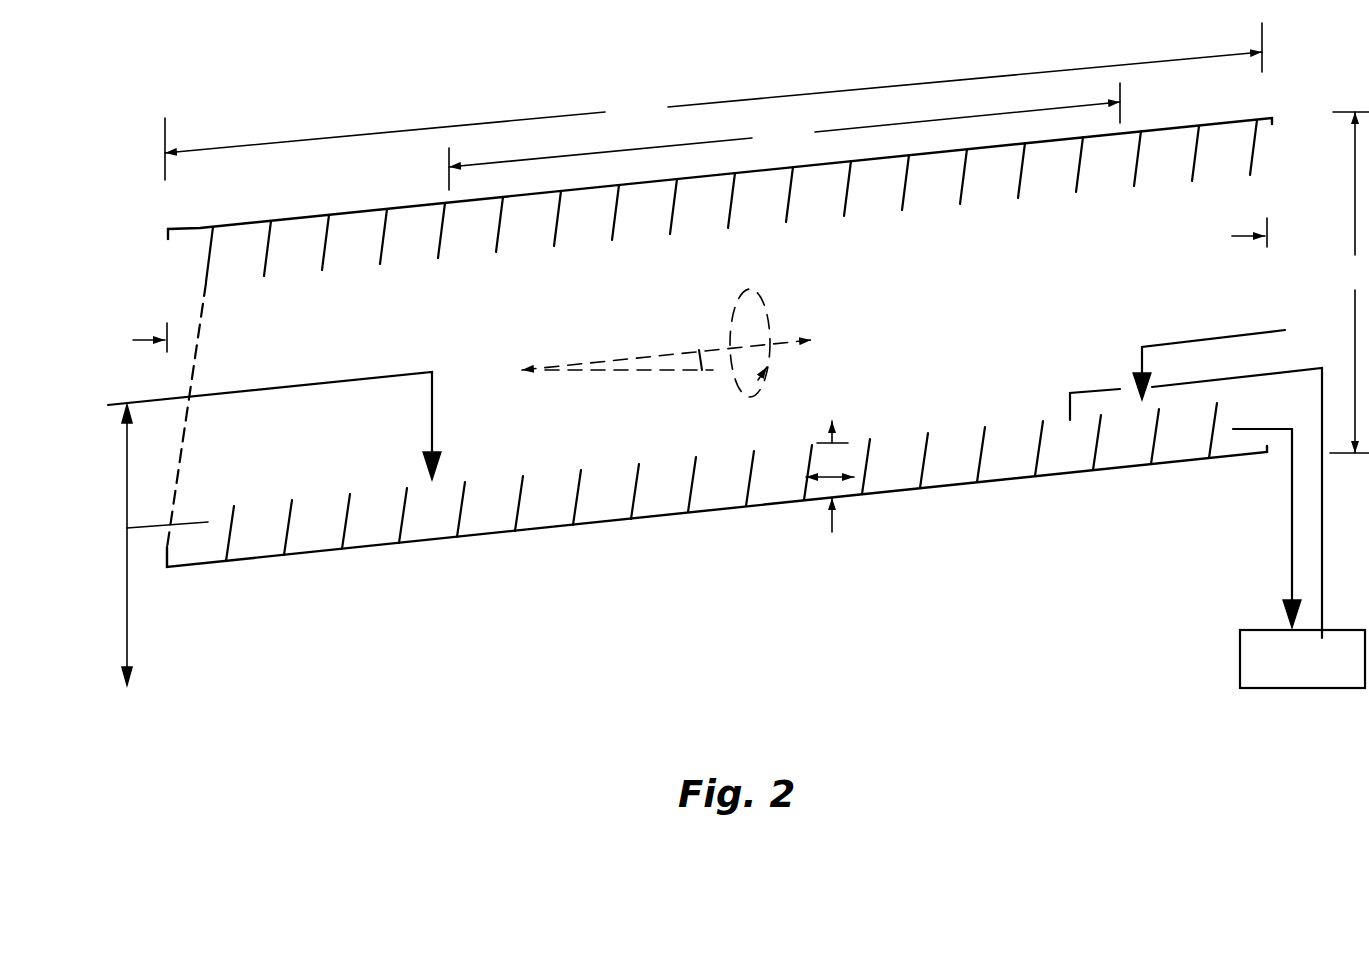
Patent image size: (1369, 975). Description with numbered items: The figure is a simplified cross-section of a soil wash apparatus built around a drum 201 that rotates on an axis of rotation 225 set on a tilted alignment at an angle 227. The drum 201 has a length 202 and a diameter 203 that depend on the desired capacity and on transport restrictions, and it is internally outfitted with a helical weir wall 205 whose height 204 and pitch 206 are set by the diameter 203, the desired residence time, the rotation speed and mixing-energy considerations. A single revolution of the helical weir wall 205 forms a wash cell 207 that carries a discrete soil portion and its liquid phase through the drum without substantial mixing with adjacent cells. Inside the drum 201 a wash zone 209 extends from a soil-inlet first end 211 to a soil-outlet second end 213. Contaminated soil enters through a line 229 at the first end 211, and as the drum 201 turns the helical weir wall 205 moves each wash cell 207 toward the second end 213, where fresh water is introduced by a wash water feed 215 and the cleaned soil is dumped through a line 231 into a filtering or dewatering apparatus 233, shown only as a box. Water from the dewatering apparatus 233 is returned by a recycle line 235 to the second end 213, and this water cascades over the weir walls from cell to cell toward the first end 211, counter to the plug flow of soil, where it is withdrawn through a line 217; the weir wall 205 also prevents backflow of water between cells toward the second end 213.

The drum 201 is at (198, 225).
The length 202 is at (713, 101).
The diameter 203 is at (1349, 282).
The height 204 is at (832, 461).
The helical weir wall 205 is at (897, 216).
The pitch 206 is at (830, 464).
The wash cell 207 is at (607, 457).
The wash zone 209 is at (784, 136).
The first end 211 is at (127, 337).
The second end 213 is at (1226, 233).
The wash water feed 215 is at (1252, 332).
The line 217 is at (140, 520).
The axis of rotation 225 is at (694, 343).
The angle 227 is at (697, 357).
The line 229 is at (242, 388).
The line 231 is at (1288, 570).
The filtering or dewatering apparatus 233 is at (1302, 659).
The line 235 is at (1108, 385).